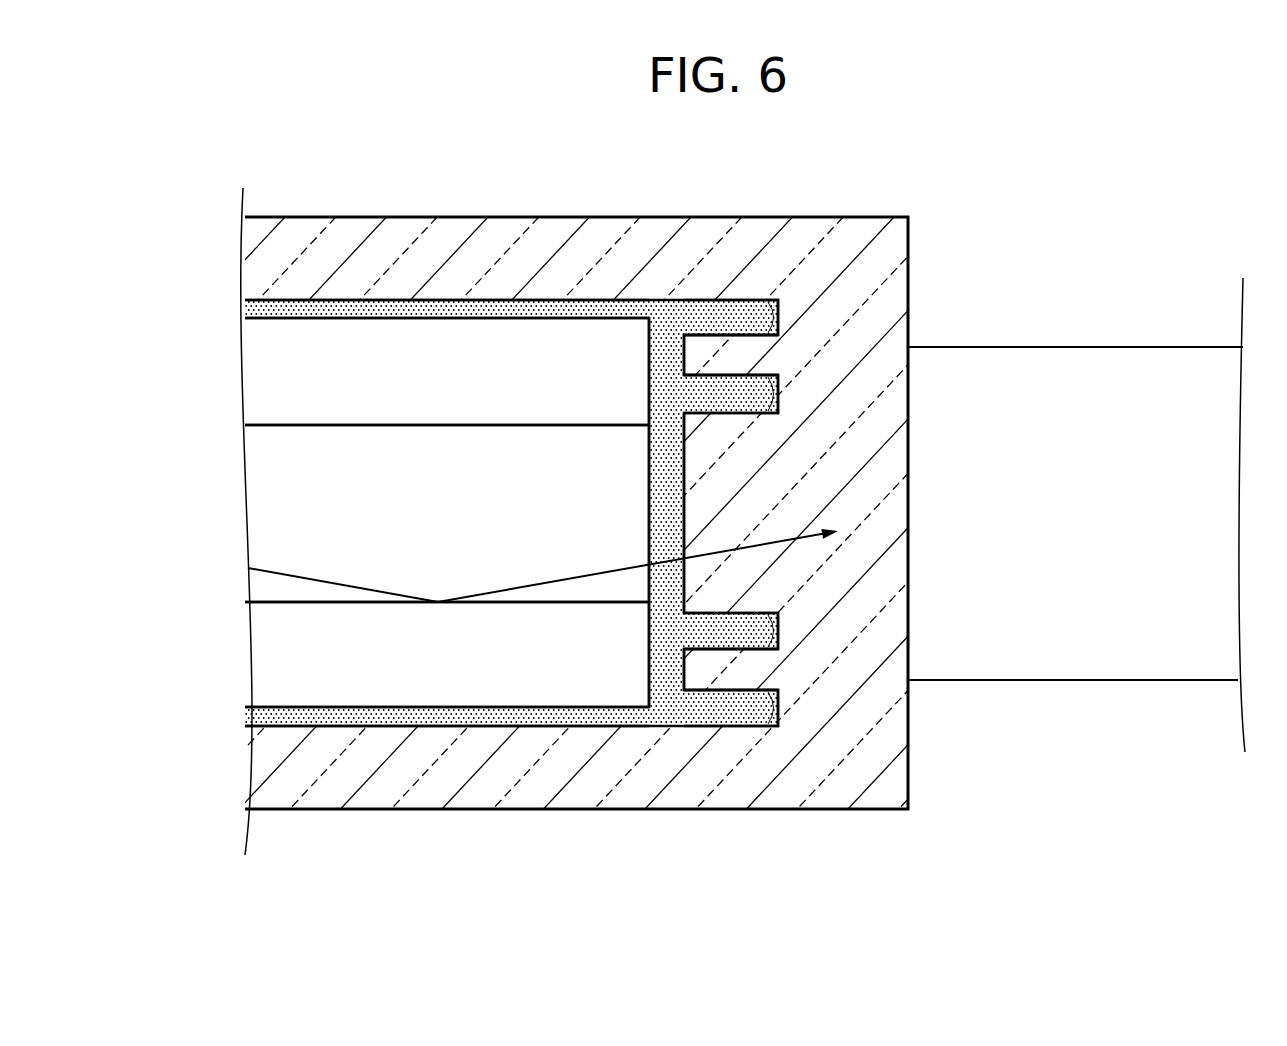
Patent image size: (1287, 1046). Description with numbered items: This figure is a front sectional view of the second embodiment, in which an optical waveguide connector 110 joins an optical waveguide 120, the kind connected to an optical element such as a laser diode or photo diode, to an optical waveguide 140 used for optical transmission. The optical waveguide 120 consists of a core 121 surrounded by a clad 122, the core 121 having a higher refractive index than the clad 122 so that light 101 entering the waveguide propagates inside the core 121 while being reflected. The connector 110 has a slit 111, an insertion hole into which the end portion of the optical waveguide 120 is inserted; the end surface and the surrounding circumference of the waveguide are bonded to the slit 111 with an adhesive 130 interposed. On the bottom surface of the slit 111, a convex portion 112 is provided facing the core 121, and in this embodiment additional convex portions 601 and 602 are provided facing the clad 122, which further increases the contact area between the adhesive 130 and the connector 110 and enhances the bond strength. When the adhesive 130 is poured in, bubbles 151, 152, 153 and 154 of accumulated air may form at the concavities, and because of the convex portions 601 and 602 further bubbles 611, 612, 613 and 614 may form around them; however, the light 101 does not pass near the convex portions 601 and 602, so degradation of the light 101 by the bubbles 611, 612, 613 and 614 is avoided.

The light 101 is at (322, 582).
The optical waveguide connector 110 is at (541, 217).
The slit 111 is at (650, 300).
The convex portion 112 is at (685, 478).
The optical waveguide 120 is at (364, 318).
The core 121 is at (263, 515).
The clad 122 is at (262, 388).
The adhesive 130 is at (703, 712).
The optical waveguide 140 is at (1080, 684).
The bubble 151 is at (778, 300).
The bubble 152 is at (780, 412).
The bubble 153 is at (778, 613).
The bubble 154 is at (778, 726).
The convex portion 601 is at (685, 353).
The convex portion 602 is at (686, 667).
The bubble 611 is at (780, 333).
The bubble 612 is at (780, 380).
The bubble 613 is at (780, 643).
The bubble 614 is at (780, 693).